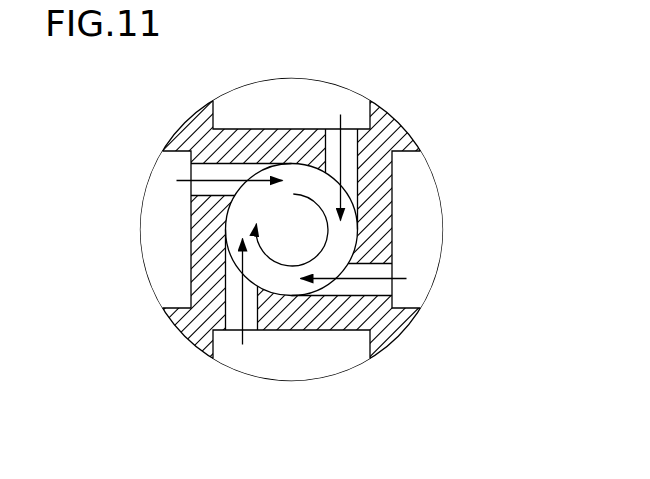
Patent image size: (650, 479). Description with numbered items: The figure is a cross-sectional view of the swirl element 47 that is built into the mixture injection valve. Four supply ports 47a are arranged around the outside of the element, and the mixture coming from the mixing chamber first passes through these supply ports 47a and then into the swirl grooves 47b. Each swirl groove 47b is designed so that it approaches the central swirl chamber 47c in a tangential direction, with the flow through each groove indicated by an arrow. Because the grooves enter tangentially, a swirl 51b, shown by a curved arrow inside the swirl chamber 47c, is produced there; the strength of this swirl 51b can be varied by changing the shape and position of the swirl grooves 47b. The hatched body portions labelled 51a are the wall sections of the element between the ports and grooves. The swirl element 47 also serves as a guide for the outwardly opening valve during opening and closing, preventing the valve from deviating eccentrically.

The swirl element 47 is at (390, 113).
The supply ports 47a is at (258, 97).
The swirl grooves 47b is at (350, 135).
The swirl chamber 47c is at (299, 180).
The partition walls 51a is at (405, 130).
The swirl 51b is at (373, 229).